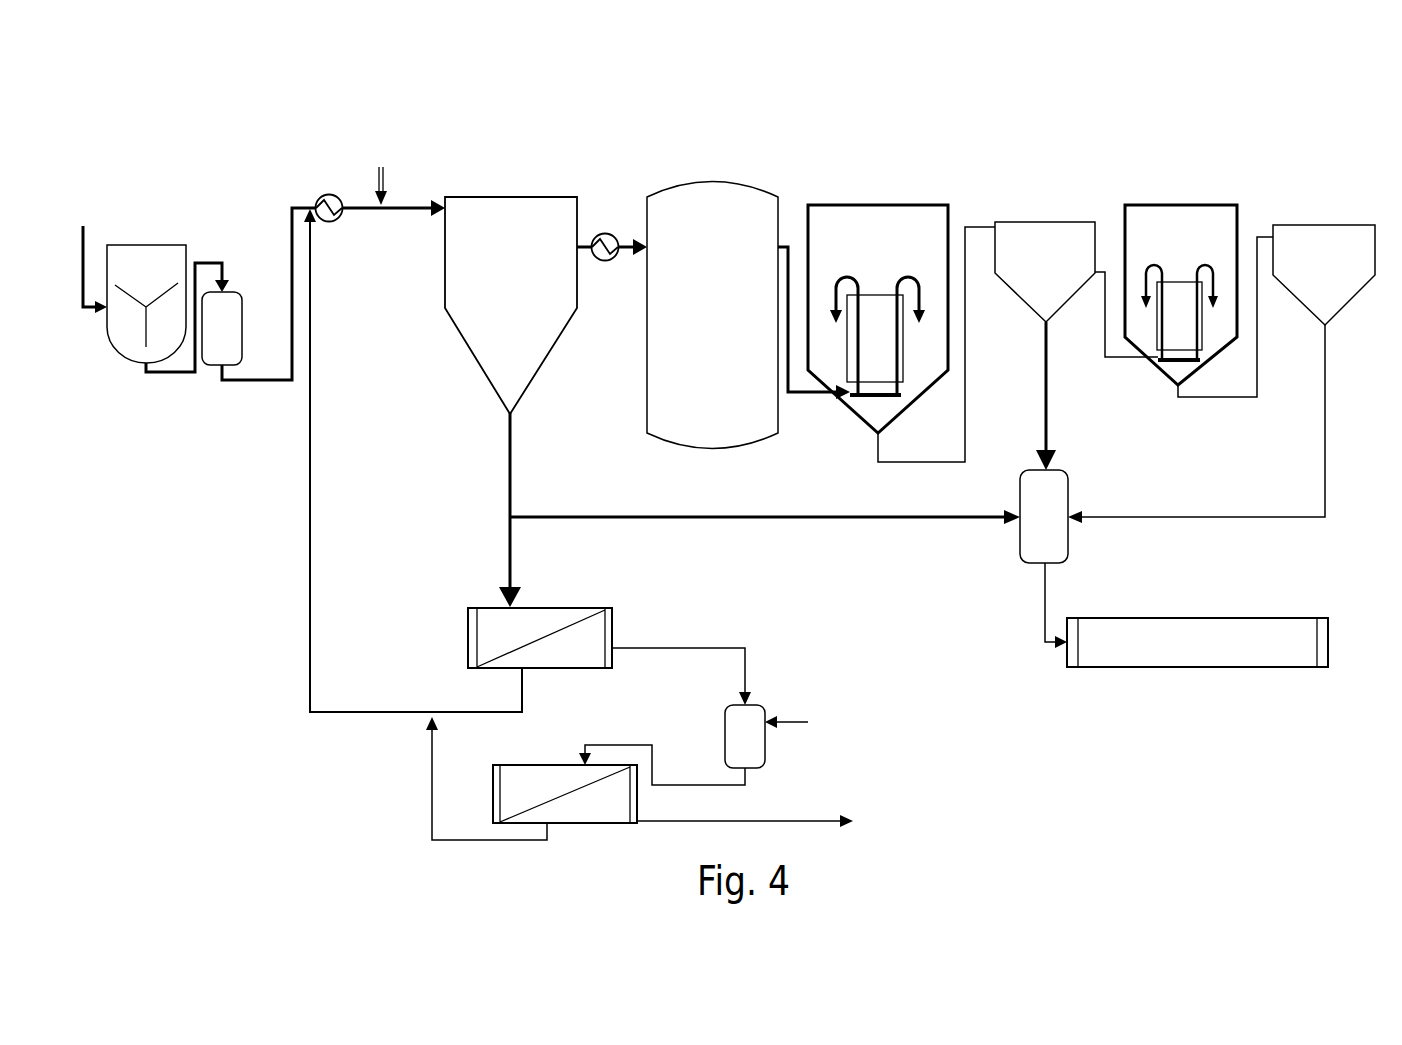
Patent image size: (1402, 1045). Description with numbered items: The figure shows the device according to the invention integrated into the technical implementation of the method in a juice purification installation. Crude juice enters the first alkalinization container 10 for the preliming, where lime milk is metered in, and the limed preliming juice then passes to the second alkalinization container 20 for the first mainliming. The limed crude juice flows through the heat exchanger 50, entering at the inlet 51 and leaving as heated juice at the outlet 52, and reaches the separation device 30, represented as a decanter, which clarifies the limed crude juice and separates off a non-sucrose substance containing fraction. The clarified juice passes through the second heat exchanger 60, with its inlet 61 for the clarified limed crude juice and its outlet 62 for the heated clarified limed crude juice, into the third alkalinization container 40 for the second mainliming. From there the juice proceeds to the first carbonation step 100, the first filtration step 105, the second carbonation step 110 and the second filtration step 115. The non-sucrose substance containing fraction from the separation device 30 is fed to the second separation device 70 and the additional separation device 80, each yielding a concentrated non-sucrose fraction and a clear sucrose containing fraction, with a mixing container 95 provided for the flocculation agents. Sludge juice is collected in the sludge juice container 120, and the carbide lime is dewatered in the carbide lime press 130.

The first alkalinization container 10 is at (143, 262).
The second alkalinization container 20 is at (227, 308).
The separation device 30 is at (537, 237).
The third alkalinization container 40 is at (743, 207).
The heat exchanger 50 is at (333, 194).
The inlet 51 is at (312, 206).
The outlet 52 is at (343, 197).
The heat exchanger 60 is at (605, 233).
The inlet 61 is at (583, 238).
The outlet 62 is at (615, 237).
The second separation device 70 is at (537, 617).
The additional separation device 80 is at (542, 778).
The mixing container 95 is at (752, 715).
The first carbonation step 100 is at (865, 215).
The first filtration step 105 is at (1047, 235).
The second carbonation step 110 is at (1180, 222).
The second filtration step 115 is at (1325, 235).
The sludge juice container 120 is at (1062, 477).
The carbide lime press 130 is at (1138, 632).